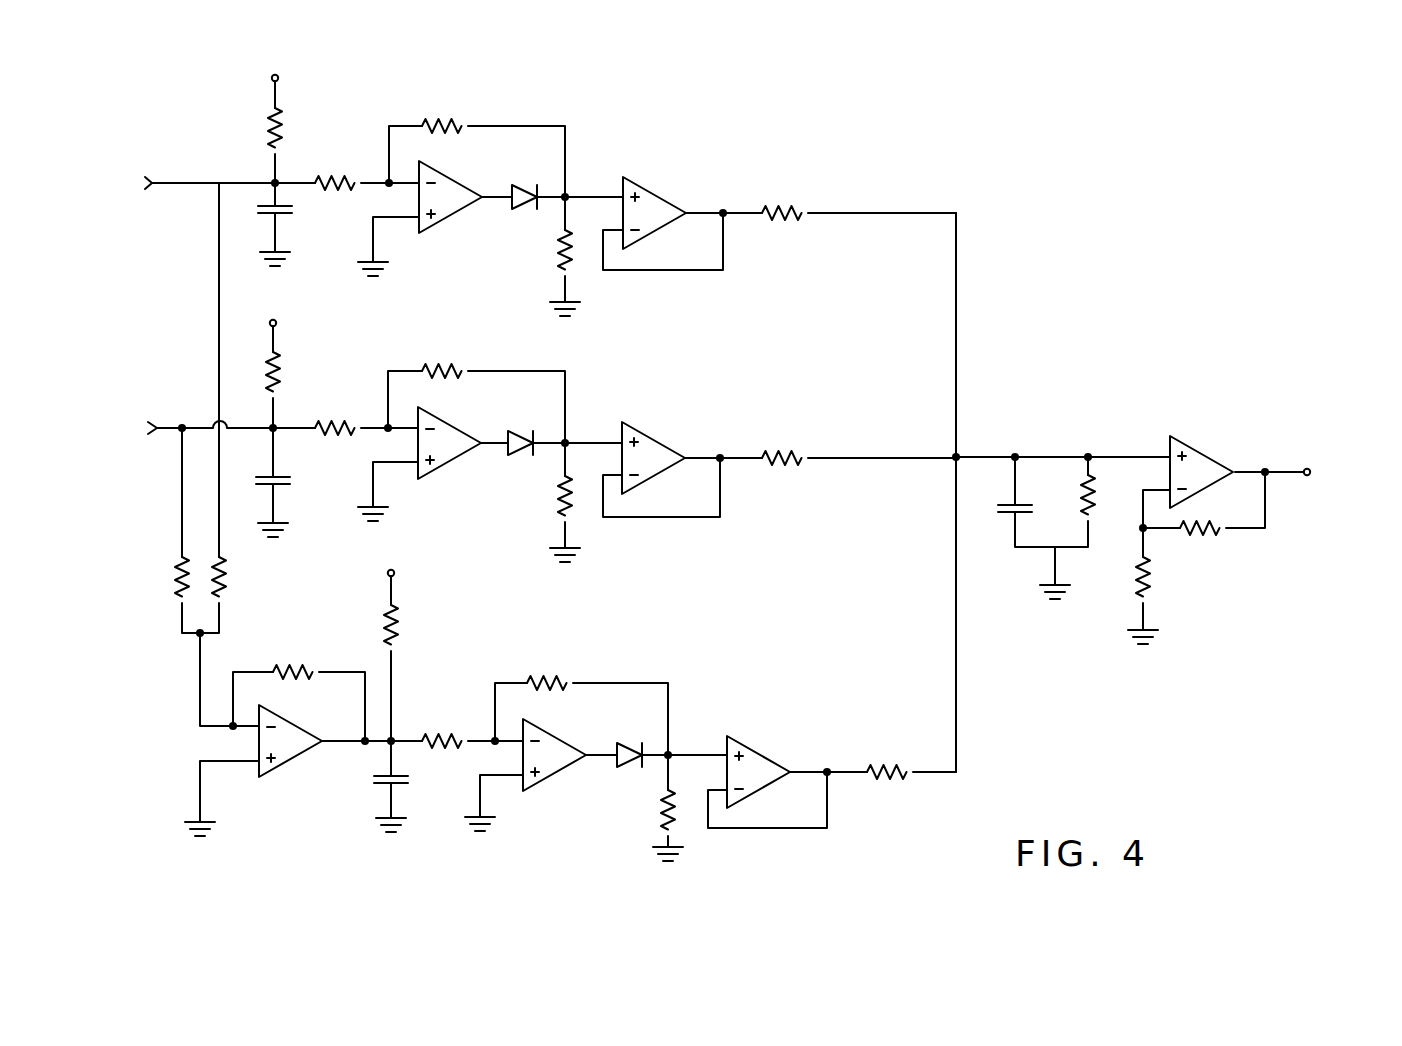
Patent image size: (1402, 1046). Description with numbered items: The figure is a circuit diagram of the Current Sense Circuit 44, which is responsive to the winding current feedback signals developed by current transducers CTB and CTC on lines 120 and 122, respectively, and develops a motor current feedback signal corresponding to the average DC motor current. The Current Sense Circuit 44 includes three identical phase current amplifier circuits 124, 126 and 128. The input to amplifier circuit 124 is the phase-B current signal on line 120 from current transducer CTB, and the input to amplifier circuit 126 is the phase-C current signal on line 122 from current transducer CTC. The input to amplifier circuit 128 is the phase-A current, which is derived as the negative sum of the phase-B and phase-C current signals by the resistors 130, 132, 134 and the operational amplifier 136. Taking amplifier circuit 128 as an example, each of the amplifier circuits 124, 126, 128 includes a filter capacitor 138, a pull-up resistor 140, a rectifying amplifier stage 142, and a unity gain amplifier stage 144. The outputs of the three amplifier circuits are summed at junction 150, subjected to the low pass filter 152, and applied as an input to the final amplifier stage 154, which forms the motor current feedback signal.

The Current Sense Circuit 44 is at (1087, 283).
The line 120 is at (190, 183).
The line 122 is at (170, 427).
The phase current amplifier circuit 124 is at (578, 100).
The phase current amplifier circuit 126 is at (585, 375).
The phase current amplifier circuit 128 is at (635, 668).
The resistor 130 is at (172, 577).
The resistor 132 is at (228, 568).
The resistor 134 is at (305, 664).
The operational amplifier 136 is at (292, 748).
The filter capacitor 138 is at (378, 790).
The pull-up resistor 140 is at (398, 626).
The rectifying amplifier stage 142 is at (572, 787).
The unity gain amplifier stage 144 is at (813, 842).
The junction 150 is at (958, 455).
The low pass filter 152 is at (1003, 542).
The final amplifier stage 154 is at (1203, 555).